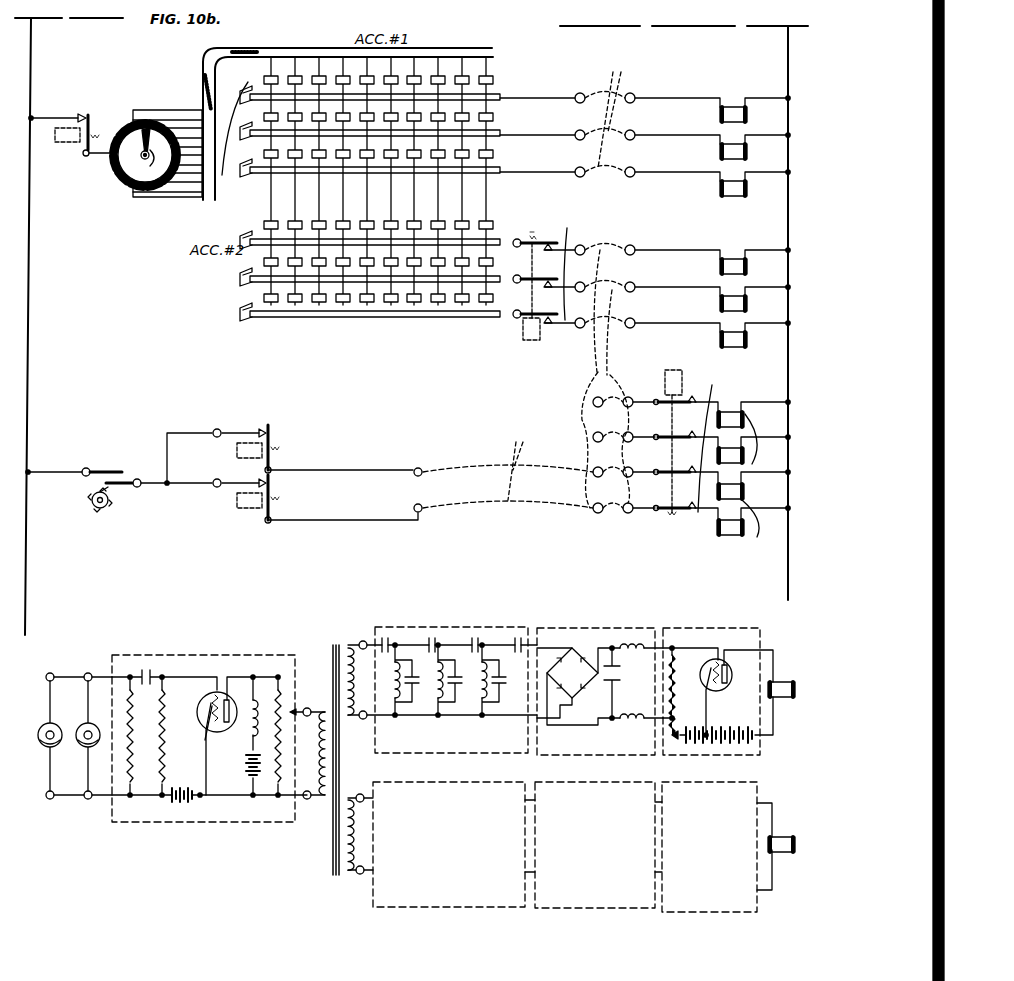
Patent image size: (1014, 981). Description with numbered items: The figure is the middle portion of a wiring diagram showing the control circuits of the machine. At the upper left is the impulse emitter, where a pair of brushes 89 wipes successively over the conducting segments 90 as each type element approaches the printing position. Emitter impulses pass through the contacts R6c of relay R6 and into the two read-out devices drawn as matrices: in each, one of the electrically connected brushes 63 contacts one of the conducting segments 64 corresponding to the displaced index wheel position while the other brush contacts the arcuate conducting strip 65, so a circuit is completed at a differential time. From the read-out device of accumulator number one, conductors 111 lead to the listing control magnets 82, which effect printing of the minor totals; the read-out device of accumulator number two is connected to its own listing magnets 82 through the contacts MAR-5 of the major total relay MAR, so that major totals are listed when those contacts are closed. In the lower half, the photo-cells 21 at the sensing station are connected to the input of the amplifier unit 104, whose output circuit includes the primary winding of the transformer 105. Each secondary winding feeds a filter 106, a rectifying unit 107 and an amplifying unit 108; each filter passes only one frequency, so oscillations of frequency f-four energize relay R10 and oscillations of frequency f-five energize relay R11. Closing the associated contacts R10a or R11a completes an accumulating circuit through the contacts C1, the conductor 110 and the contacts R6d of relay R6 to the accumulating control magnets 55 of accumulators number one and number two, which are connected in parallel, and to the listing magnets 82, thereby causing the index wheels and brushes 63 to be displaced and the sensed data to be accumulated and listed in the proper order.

The photo-cells 21 is at (80, 724).
The accumulating control magnets 55 is at (728, 448).
The brushes 63 is at (248, 166).
The conducting segments 64 is at (391, 203).
The arcuate conducting strip 65 is at (457, 170).
The listing control magnets 82 is at (752, 120).
The brushes 89 is at (145, 155).
The conducting segments 90 is at (158, 142).
The amplifier unit 104 is at (182, 656).
The transformer 105 is at (328, 705).
The filter units 106 is at (466, 627).
The rectifying units 107 is at (590, 628).
The amplifying units 108 is at (707, 628).
The conductor 110 is at (503, 468).
The conductors 111 is at (570, 122).
The relay R6 is at (68, 145).
The contacts R6c is at (85, 115).
The contacts R6d is at (657, 443).
The relay R10 is at (237, 450).
The contacts R10a is at (272, 432).
The relay R11 is at (237, 498).
The contacts R11a is at (272, 481).
The contacts C1 is at (120, 472).
The relay MAR is at (523, 335).
The contacts MAR5 MAR-5 is at (553, 243).